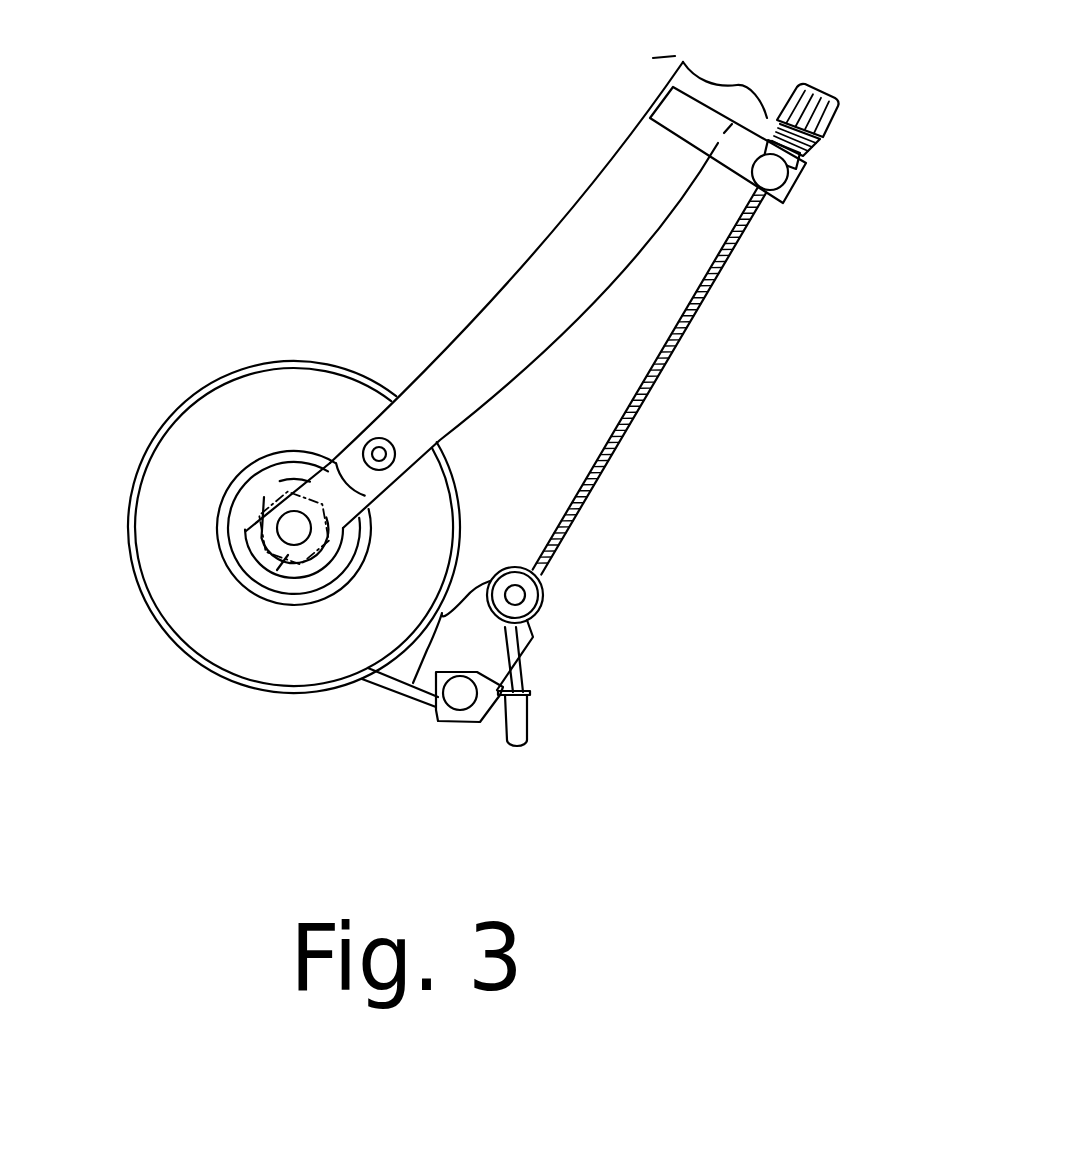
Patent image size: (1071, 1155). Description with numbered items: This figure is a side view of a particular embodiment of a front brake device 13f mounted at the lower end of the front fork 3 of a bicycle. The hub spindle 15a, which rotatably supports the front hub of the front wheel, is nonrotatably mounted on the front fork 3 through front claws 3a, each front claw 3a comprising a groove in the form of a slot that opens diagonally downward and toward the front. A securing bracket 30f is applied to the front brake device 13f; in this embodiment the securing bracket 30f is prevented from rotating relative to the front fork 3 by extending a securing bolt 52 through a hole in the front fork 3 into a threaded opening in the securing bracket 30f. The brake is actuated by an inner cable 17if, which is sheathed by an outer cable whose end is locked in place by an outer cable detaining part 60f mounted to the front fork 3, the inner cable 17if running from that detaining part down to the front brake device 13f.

The front fork 3 is at (503, 290).
The front claw 3a is at (264, 497).
The front brake device 13f is at (260, 702).
The hub spindle 15a is at (286, 539).
The inner cable 17if is at (677, 350).
The securing bracket 30f is at (260, 387).
The securing bolt 52 is at (378, 438).
The outer cable detaining part 60f is at (822, 128).